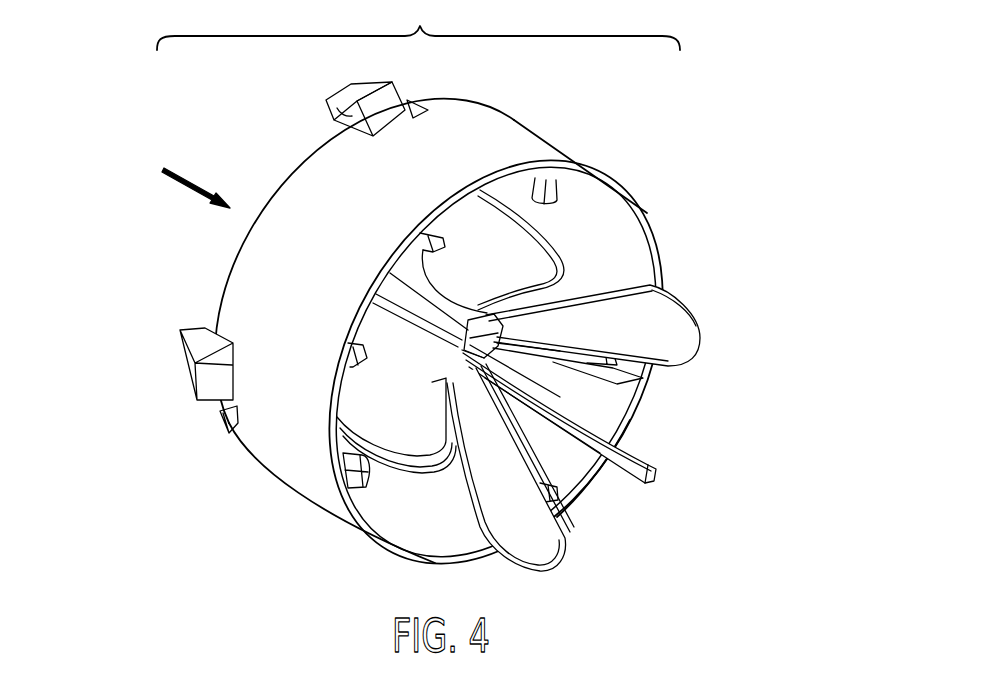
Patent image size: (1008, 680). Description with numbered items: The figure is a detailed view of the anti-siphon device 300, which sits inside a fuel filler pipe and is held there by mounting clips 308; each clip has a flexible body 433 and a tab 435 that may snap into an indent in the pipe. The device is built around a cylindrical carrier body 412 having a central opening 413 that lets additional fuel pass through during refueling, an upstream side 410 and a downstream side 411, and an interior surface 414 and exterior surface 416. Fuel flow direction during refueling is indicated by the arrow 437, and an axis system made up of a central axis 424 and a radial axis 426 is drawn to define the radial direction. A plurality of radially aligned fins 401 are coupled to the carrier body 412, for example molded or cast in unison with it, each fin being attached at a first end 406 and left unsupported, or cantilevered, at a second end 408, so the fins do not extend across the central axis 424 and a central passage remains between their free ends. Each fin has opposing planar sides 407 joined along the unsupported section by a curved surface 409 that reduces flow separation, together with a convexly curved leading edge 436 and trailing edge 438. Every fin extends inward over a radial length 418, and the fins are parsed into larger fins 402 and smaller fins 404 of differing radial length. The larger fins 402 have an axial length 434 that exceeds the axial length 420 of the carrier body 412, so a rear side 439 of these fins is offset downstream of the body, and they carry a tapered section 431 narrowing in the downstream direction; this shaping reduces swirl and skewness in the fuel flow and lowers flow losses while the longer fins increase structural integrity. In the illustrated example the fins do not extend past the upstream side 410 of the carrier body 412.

The anti-siphon device 300 is at (418, 25).
The mounting clips 308 is at (317, 94).
The tab 435 is at (374, 76).
The flexible body 433 is at (348, 120).
The upstream side 410 is at (297, 146).
The arrow 437 is at (186, 179).
The axial length 420 is at (388, 251).
The exterior surface 416 is at (407, 196).
The second end 408 is at (476, 327).
The curved surface 409 is at (472, 343).
The leading edge 436 is at (461, 364).
The opposing planar sides 407 is at (567, 319).
The radial length 418 is at (494, 321).
The first end 406 is at (659, 288).
The tapered section 431 is at (620, 332).
The radial axis 426 is at (525, 356).
The central axis 424 is at (488, 351).
The axial length 434 is at (523, 405).
The interior surface 414 is at (560, 474).
The downstream side 411 is at (497, 362).
The rear side 439 is at (674, 461).
The fins 401 is at (558, 401).
The central opening 413 is at (575, 438).
The trailing edge 438 is at (656, 485).
The larger fins 402 is at (530, 488).
The smaller fins 404 is at (363, 495).
The carrier body 412 is at (268, 437).